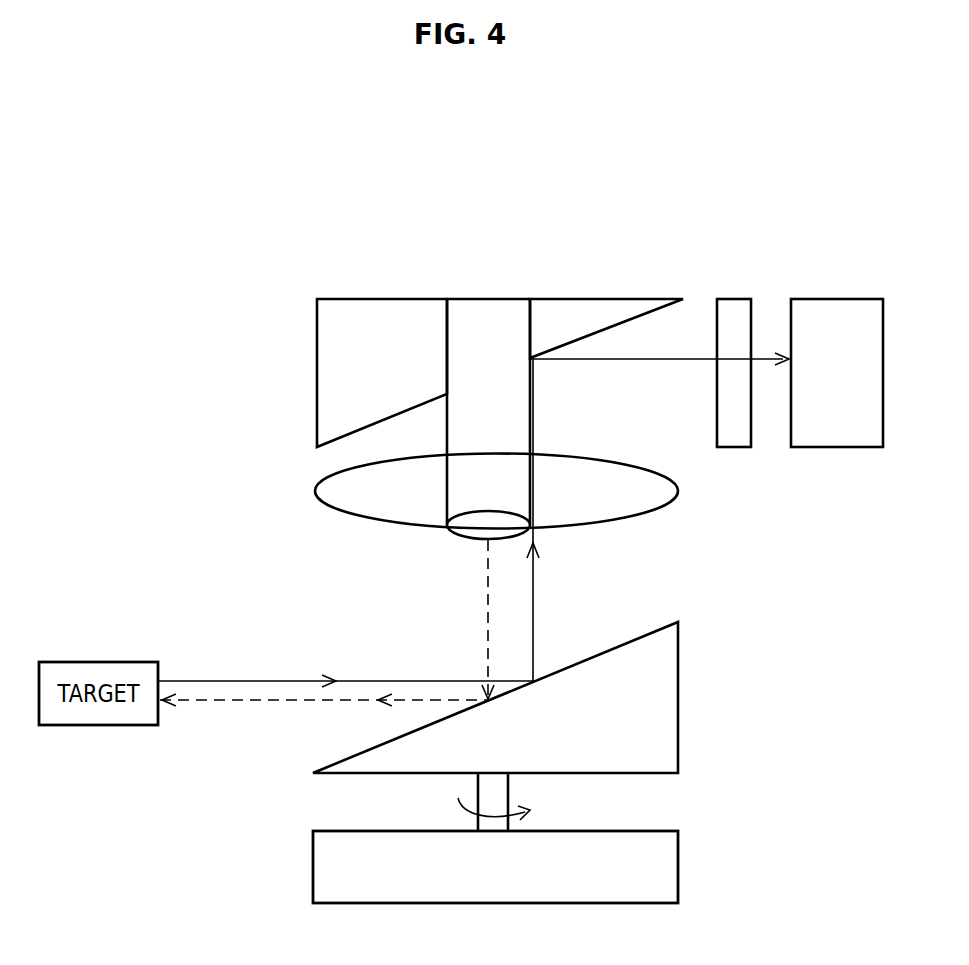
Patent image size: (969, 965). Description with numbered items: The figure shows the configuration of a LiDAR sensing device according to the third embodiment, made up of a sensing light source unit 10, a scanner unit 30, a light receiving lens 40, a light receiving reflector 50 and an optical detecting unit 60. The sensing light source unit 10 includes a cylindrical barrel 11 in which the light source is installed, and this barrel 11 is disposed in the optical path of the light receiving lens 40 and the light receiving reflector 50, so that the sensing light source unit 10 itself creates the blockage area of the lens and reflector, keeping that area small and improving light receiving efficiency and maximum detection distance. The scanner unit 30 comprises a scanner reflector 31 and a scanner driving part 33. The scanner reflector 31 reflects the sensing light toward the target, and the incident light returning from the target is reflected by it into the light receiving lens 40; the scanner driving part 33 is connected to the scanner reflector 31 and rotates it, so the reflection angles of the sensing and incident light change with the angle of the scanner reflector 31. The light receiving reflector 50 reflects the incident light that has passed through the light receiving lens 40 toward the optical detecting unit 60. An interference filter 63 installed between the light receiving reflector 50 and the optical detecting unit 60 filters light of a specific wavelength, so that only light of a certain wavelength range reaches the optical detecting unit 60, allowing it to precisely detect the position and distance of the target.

The sensing light source unit 10 is at (499, 323).
The barrel 11 is at (531, 410).
The scanner unit 30 is at (562, 762).
The scanner reflector 31 is at (678, 745).
The scanner driving part 33 is at (678, 860).
The light receiving lens 40 is at (337, 512).
The light receiving reflector 50 is at (356, 299).
The optical detecting unit 60 is at (838, 299).
The interference filter 63 is at (736, 299).